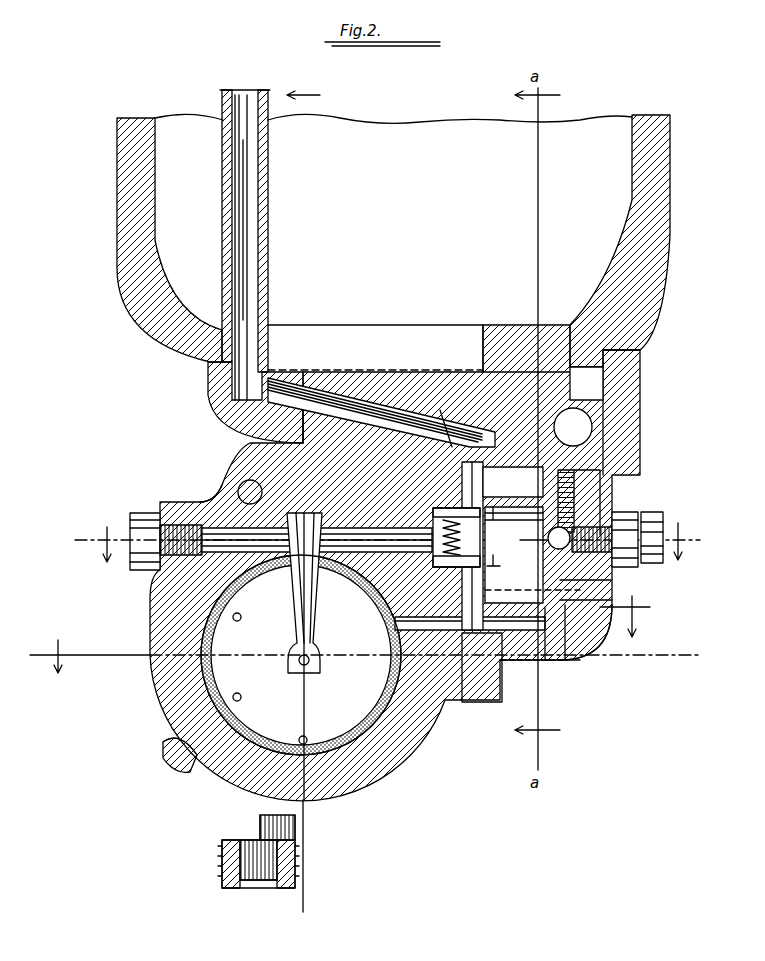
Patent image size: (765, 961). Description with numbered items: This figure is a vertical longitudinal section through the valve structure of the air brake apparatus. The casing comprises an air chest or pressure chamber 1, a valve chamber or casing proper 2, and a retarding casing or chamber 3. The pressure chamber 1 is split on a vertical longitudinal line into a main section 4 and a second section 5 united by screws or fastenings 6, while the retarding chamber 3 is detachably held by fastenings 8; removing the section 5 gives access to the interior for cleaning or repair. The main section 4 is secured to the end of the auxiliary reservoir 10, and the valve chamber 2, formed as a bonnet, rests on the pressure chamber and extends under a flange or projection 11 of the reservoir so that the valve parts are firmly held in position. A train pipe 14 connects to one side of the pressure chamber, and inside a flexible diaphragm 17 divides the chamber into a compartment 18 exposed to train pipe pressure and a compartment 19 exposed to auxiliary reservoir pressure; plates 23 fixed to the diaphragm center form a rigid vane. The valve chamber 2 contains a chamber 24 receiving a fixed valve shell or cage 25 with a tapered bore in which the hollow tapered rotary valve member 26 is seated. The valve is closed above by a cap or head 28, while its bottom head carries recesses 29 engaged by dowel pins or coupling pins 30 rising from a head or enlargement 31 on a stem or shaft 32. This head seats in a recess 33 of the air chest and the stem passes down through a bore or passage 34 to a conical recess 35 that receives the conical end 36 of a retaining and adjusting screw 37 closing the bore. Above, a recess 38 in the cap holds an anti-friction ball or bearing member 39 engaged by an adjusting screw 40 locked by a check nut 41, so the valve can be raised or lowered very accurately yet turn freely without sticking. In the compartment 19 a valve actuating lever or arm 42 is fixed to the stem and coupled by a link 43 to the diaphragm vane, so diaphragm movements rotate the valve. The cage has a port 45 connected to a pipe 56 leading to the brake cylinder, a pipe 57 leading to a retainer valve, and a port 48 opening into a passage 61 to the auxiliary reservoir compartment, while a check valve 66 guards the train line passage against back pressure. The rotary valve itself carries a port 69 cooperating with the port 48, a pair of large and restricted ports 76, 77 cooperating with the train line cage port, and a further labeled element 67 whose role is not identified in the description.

The air chest or pressure chamber 1 is at (405, 750).
The valve chamber or casing proper 2 is at (600, 630).
The retarding casing or chamber 3 is at (301, 869).
The main section of pressure chamber 4 is at (379, 542).
The section of pressure chamber 5 is at (356, 634).
The screws or fastenings 6 is at (344, 738).
The screws or fastenings 8 is at (470, 376).
The auxiliary reservoir 10 is at (596, 132).
The flange or projection 11 is at (636, 362).
The train pipe 14 is at (230, 835).
The flexible diaphragm 17 is at (237, 740).
The compartment 18 is at (514, 555).
The compartment 19 is at (502, 522).
The plates 23 is at (301, 655).
The chamber 24 is at (570, 610).
The valve shell or cage 25 is at (556, 632).
The rotary valve member 26 is at (600, 480).
The cap or head 28 is at (598, 510).
The recesses 29 is at (459, 541).
The dowel pins or coupling pins 30 is at (430, 410).
The head or enlargement 31 is at (441, 430).
The stem or shaft 32 is at (216, 487).
The recess 33 is at (395, 628).
The bore or passage 34 is at (355, 570).
The conical recess 35 is at (207, 503).
The conical end 36 is at (247, 575).
The retaining and adjusting screw 37 is at (160, 520).
The recess 38 is at (575, 552).
The anti-friction ball or bearing member 39 is at (617, 513).
The adjusting screw 40 is at (640, 518).
The check nut 41 is at (660, 563).
The valve actuating lever or arm 42 is at (312, 624).
The link 43 is at (310, 664).
The port 45 is at (600, 457).
The port 48 is at (613, 598).
The pipe 56 is at (267, 400).
The pipe 57 is at (580, 428).
The passage 61 is at (502, 620).
The check valve 66 is at (540, 689).
The chamber 67 is at (510, 492).
The port 69 is at (532, 580).
The port 76 is at (531, 552).
The port 77 is at (498, 556).